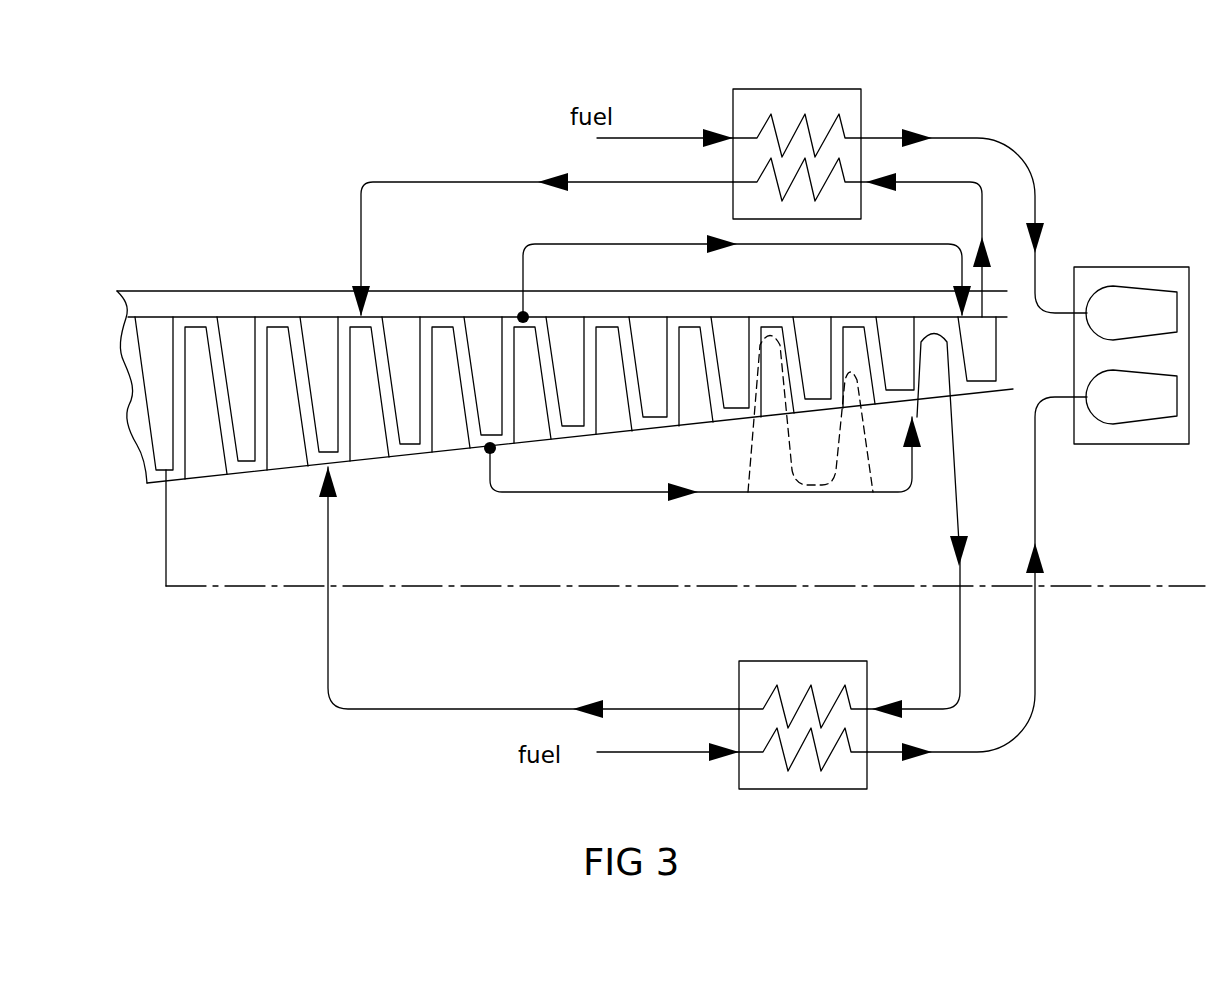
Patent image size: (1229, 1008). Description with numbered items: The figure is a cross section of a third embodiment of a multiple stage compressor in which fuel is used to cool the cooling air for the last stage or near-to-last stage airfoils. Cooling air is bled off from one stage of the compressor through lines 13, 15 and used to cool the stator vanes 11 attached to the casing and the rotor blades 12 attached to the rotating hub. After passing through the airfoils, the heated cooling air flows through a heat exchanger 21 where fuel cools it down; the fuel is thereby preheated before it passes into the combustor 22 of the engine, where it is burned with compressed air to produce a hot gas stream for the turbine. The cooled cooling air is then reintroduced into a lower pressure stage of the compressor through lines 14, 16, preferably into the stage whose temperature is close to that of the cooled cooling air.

The stator vanes 11 is at (975, 368).
The rotor blades 12 is at (933, 382).
The cooling air bleed line 13 is at (537, 240).
The cooled cooling air return line 14 is at (361, 212).
The cooling air bleed line 15 is at (578, 492).
The cooled cooling air return line 16 is at (328, 698).
The heat exchanger 21 is at (788, 107).
The combustor 22 is at (1128, 308).